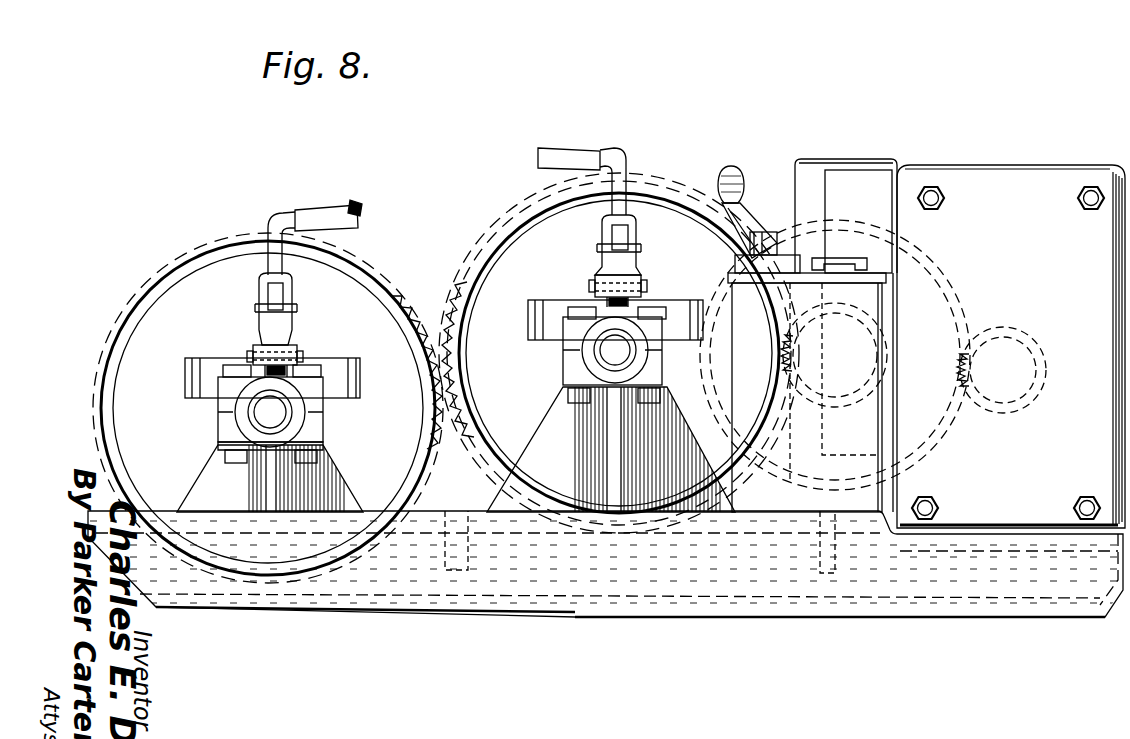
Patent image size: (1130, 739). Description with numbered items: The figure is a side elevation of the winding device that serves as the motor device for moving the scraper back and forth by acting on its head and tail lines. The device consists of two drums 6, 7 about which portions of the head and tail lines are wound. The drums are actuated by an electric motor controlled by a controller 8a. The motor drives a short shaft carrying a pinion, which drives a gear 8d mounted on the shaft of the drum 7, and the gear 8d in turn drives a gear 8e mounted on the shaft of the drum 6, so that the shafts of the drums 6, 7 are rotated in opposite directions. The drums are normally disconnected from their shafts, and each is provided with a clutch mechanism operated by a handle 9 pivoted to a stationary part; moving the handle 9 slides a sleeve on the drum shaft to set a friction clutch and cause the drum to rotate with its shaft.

The drum 6 is at (347, 312).
The drum 7 is at (521, 253).
The controller 8a is at (845, 288).
The gear 8d is at (467, 437).
The gear 8e is at (420, 318).
The handle 9 is at (333, 215).